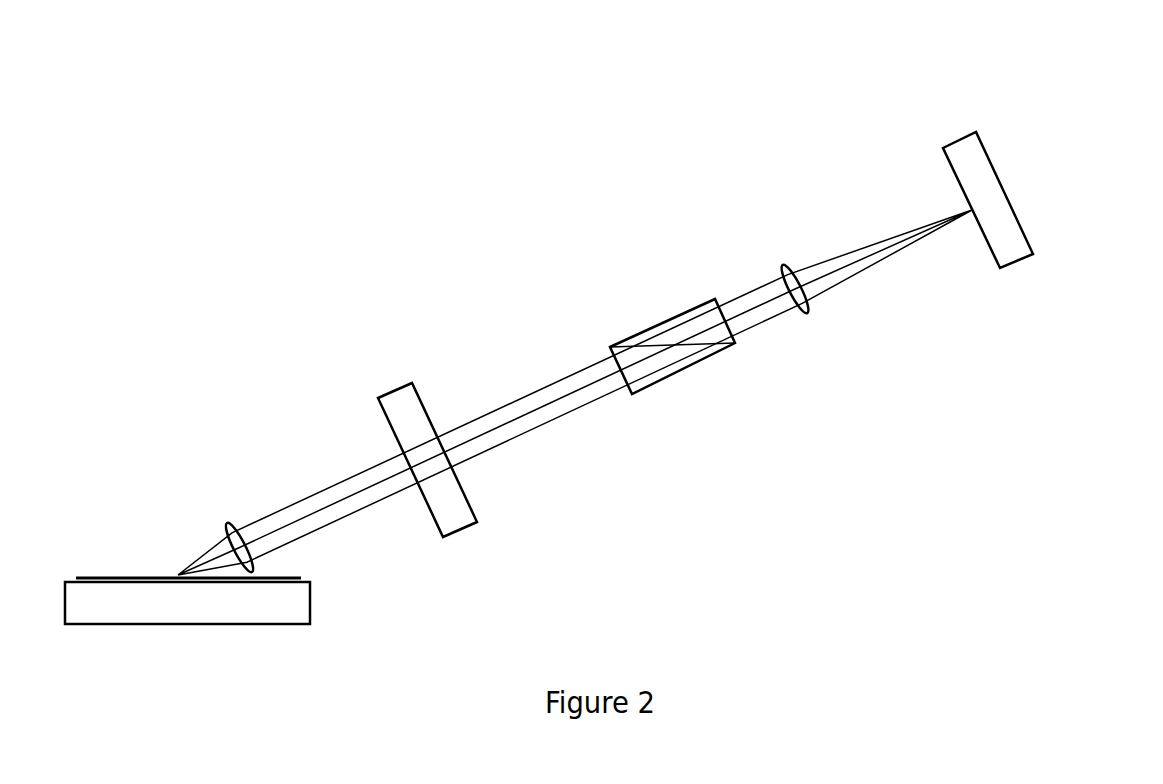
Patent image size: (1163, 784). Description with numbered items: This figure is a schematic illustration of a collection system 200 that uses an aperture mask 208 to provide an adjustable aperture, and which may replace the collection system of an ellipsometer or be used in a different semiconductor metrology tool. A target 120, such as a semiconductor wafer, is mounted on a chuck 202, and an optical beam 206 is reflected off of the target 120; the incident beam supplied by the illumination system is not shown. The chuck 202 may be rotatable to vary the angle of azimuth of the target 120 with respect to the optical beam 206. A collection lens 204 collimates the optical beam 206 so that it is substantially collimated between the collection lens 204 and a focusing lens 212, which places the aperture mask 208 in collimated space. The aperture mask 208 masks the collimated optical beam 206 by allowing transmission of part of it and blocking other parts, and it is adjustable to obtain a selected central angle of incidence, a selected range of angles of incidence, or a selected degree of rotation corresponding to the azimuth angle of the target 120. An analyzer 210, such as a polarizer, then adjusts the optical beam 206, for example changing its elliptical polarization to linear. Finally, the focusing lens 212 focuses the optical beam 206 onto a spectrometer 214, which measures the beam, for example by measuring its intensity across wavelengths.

The collection system 200 is at (532, 48).
The target 120 is at (122, 577).
The chuck 202 is at (152, 625).
The collection lens 204 is at (228, 523).
The optical beam 206 is at (353, 508).
The aperture mask 208 is at (397, 388).
The analyzer 210 is at (663, 322).
The focusing lens 212 is at (783, 267).
The spectrometer 214 is at (990, 162).